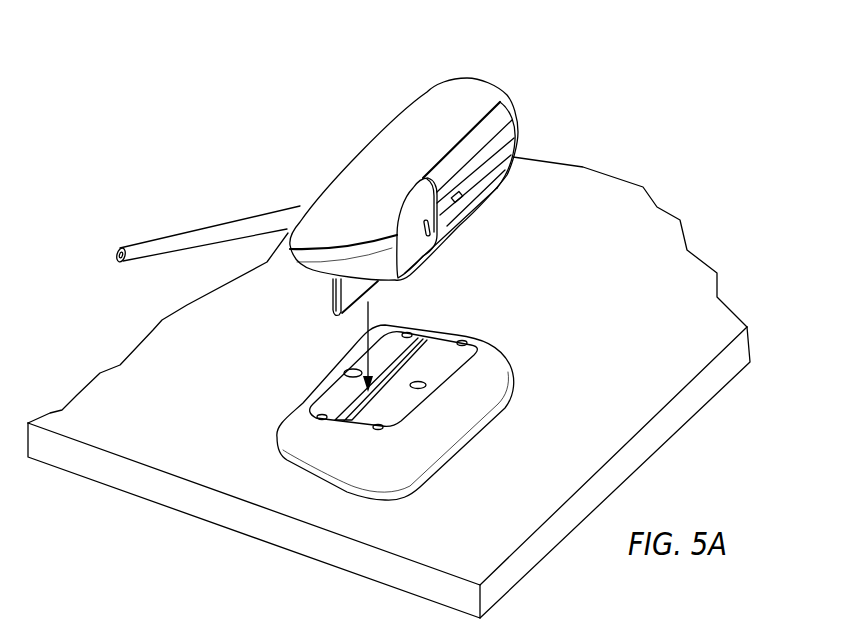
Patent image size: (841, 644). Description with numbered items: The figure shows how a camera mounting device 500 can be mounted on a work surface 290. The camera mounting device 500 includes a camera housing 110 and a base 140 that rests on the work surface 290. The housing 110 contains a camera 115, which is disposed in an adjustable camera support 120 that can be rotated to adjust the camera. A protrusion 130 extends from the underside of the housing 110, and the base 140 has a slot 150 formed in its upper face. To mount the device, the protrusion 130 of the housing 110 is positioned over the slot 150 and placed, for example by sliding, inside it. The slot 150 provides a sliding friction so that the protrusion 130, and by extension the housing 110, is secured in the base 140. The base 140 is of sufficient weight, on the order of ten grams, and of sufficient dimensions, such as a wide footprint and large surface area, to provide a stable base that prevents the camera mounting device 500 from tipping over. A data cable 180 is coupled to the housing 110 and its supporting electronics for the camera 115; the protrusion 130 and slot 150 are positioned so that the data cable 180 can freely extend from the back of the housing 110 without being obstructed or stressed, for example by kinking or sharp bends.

The camera housing 110 is at (413, 143).
The camera 115 is at (443, 210).
The adjustable camera support 120 is at (513, 100).
The protrusion 130 is at (330, 296).
The base 140 is at (320, 452).
The slot 150 is at (410, 353).
The data cable 180 is at (195, 238).
The work surface 290 is at (648, 252).
The camera mounting device 500 is at (640, 86).